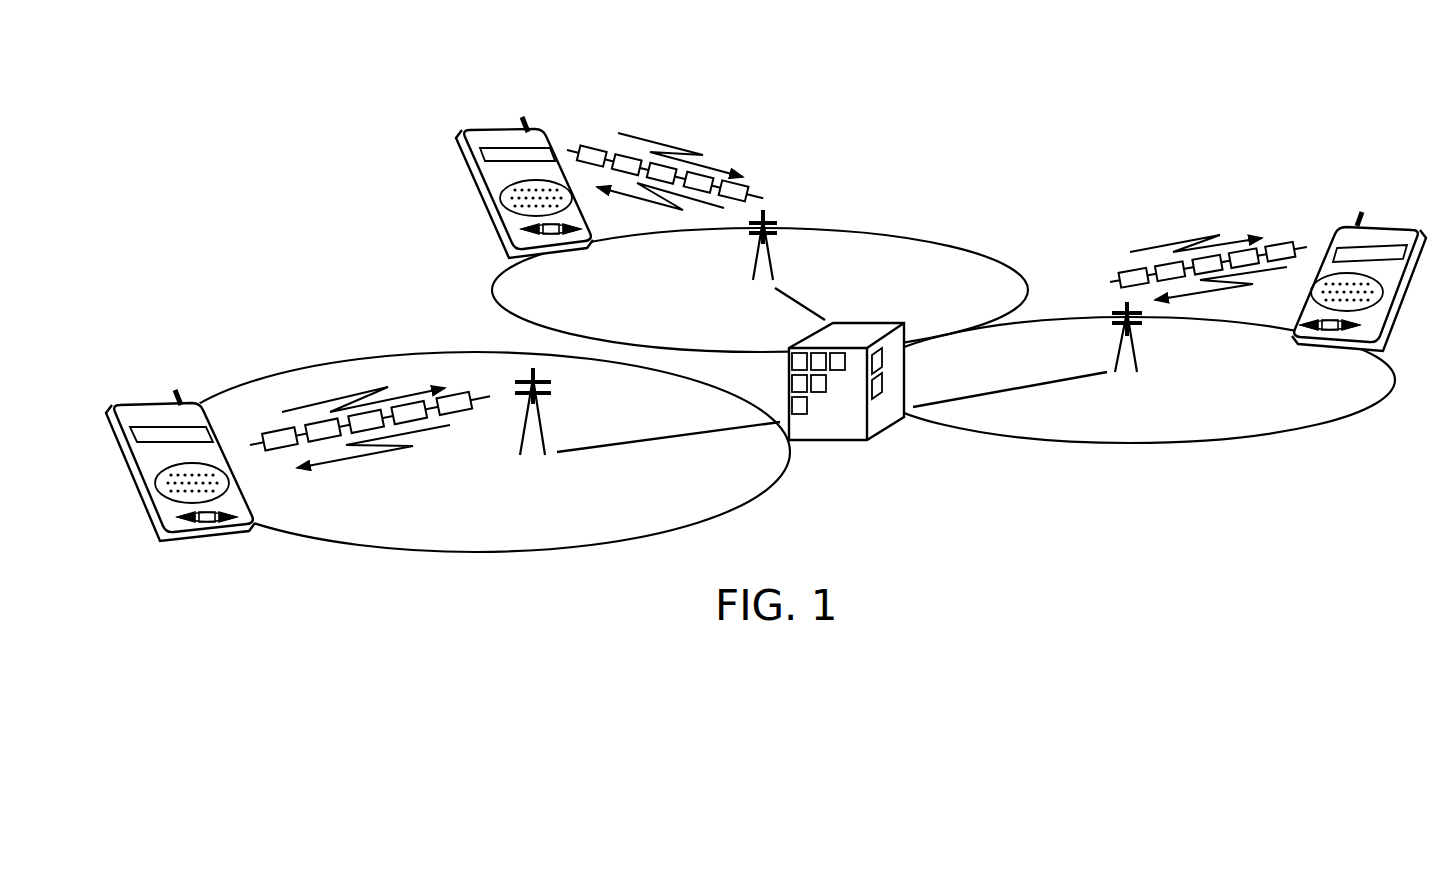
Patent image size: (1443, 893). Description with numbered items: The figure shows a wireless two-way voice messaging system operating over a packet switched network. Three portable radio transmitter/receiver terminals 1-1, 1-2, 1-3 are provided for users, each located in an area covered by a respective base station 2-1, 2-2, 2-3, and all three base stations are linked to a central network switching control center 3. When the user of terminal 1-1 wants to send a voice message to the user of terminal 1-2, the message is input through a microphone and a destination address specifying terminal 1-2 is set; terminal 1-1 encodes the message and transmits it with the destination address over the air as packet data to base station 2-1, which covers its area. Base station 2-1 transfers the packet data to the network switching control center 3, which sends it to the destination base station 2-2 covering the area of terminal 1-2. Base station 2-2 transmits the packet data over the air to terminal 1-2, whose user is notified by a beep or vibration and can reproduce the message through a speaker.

The portable radio transmitter/receiver terminal 1-1 is at (247, 497).
The portable radio transmitter/receiver terminal 1-2 is at (500, 128).
The portable radio transmitter/receiver terminal 1-3 is at (1338, 224).
The base station 2-1 is at (538, 406).
The destination base station 2-2 is at (770, 245).
The base station 2-3 is at (1137, 337).
The network switching control center 3 is at (898, 360).